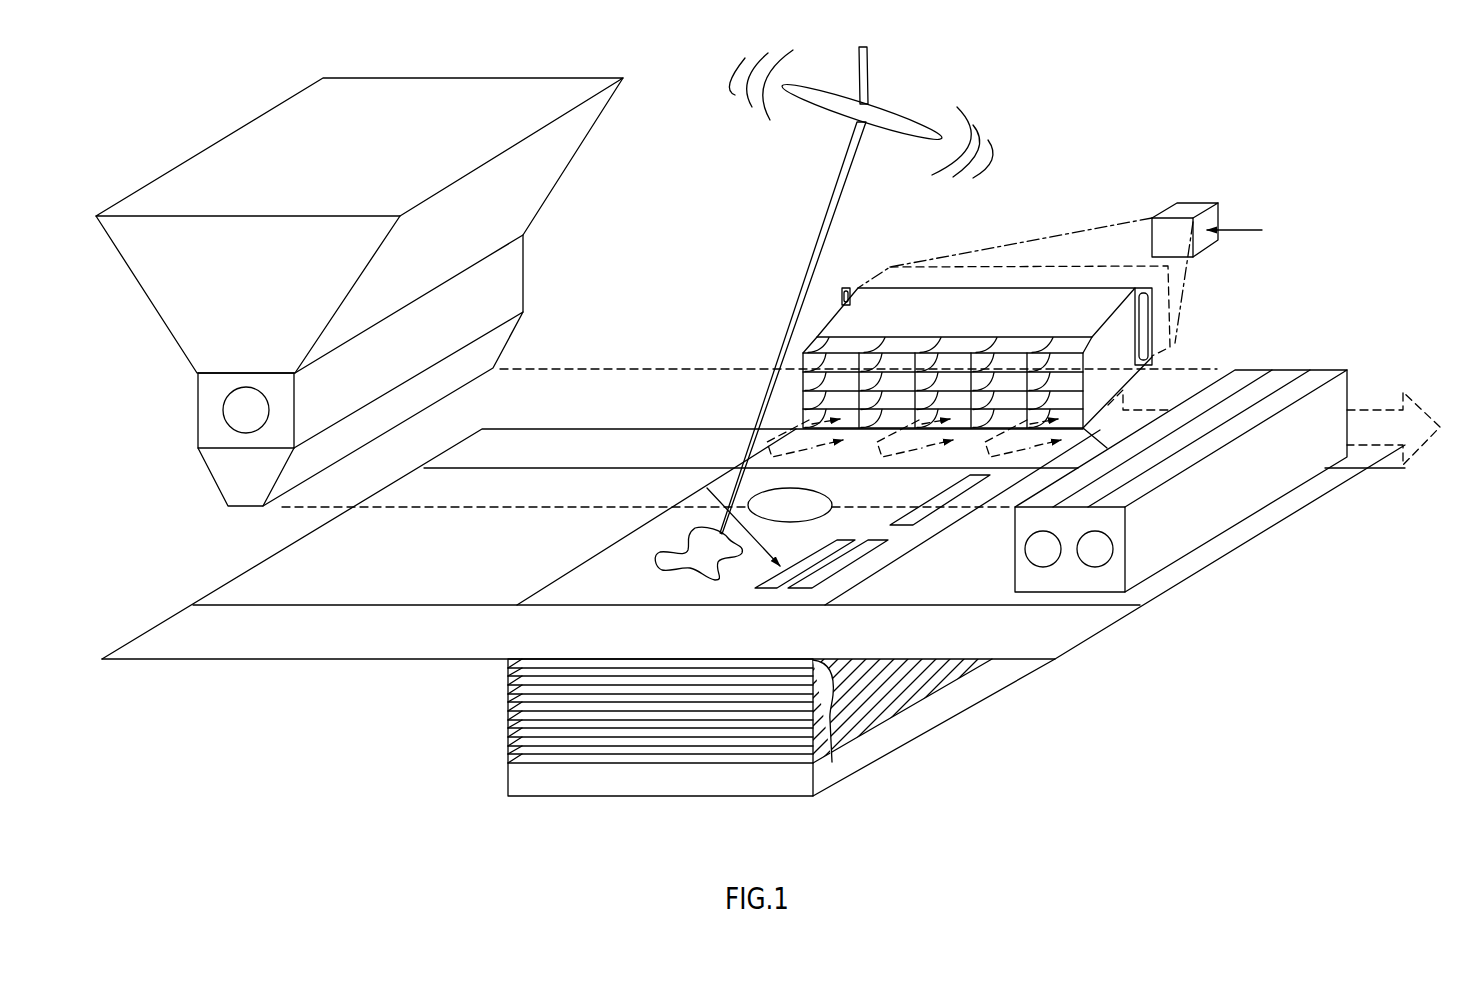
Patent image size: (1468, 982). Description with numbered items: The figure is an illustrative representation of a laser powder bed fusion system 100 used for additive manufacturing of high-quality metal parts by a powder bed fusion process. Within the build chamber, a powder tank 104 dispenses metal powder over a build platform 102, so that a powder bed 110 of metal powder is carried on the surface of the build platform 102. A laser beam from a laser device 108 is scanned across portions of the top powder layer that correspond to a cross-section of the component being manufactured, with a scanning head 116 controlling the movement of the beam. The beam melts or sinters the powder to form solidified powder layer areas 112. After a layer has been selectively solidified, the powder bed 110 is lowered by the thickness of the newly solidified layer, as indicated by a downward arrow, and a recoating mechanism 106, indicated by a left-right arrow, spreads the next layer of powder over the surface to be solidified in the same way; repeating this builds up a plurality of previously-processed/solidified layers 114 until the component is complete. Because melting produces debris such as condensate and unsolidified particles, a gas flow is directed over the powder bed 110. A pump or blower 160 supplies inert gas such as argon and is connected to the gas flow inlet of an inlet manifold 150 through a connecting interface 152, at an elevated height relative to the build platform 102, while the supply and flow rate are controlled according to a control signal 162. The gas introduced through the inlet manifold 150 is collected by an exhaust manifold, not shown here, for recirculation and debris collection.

The laser powder bed fusion system 100 is at (1296, 98).
The build platform 102 is at (735, 787).
The powder tank 104 is at (207, 148).
The recoating mechanism 106 is at (1258, 488).
The laser device 108 is at (868, 62).
The powder bed 110 is at (437, 577).
The solidified powder layer areas 112 is at (925, 497).
The previously-processed/solidified layers 114 is at (833, 710).
The scanning head 116 is at (910, 118).
The inlet manifold 150 is at (998, 288).
The connecting interface 152 is at (1080, 267).
The pump or blower 160 is at (1198, 203).
The control signal 162 is at (1252, 230).